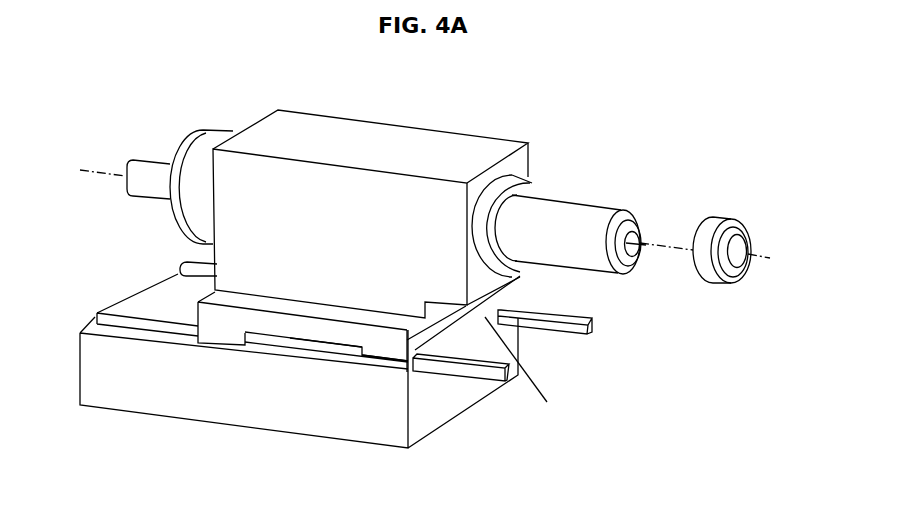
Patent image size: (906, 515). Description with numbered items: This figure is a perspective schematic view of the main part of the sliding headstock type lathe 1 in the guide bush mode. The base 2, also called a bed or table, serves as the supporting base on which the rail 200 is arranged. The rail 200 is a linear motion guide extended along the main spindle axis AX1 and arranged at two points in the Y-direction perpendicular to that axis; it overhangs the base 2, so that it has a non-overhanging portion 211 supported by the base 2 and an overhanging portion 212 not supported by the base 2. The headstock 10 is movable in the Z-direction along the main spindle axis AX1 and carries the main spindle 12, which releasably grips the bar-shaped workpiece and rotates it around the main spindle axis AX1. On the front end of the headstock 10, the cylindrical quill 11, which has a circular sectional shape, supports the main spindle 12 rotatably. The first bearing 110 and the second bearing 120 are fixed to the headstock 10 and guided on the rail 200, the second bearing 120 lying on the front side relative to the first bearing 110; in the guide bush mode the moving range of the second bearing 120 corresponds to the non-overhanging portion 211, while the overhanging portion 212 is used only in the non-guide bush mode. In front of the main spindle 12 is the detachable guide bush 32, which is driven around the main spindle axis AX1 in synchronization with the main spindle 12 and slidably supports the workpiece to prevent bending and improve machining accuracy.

The sliding headstock type lathe 1 is at (167, 94).
The base 2 is at (137, 382).
The headstock 10 is at (272, 202).
The quill 11 is at (603, 203).
The main spindle 12 is at (630, 258).
The guide bush 32 is at (730, 217).
The first bearing 110 is at (216, 337).
The second bearing 120 is at (382, 358).
The rail 200 is at (168, 275).
The non-overhanging portion 211 is at (347, 358).
The overhanging portion 212 is at (570, 325).
The main spindle axis AX1 is at (93, 170).